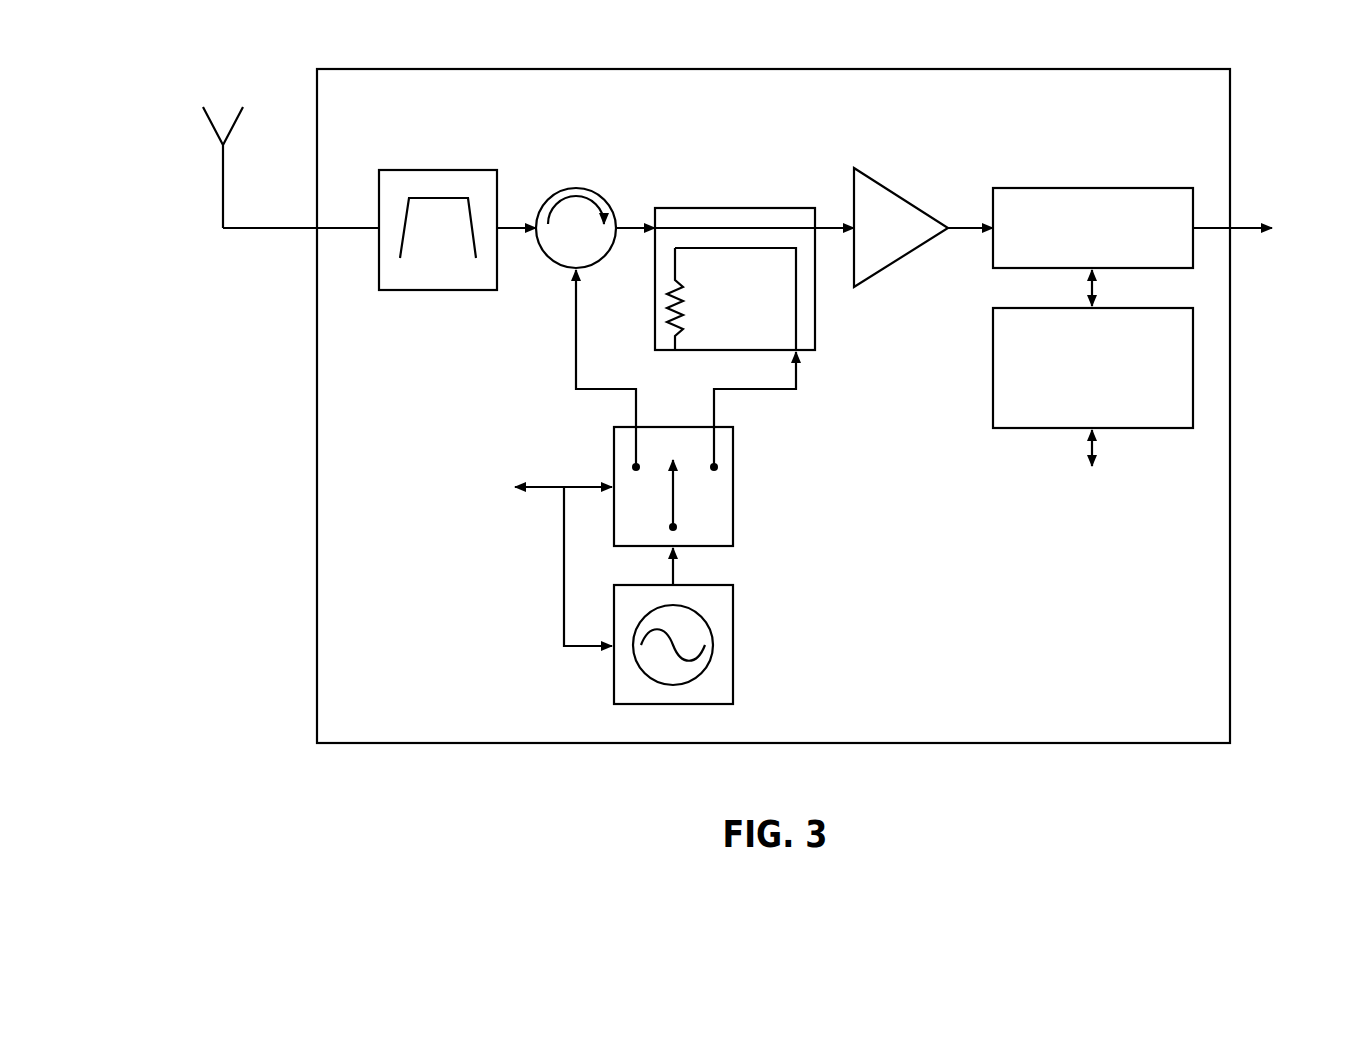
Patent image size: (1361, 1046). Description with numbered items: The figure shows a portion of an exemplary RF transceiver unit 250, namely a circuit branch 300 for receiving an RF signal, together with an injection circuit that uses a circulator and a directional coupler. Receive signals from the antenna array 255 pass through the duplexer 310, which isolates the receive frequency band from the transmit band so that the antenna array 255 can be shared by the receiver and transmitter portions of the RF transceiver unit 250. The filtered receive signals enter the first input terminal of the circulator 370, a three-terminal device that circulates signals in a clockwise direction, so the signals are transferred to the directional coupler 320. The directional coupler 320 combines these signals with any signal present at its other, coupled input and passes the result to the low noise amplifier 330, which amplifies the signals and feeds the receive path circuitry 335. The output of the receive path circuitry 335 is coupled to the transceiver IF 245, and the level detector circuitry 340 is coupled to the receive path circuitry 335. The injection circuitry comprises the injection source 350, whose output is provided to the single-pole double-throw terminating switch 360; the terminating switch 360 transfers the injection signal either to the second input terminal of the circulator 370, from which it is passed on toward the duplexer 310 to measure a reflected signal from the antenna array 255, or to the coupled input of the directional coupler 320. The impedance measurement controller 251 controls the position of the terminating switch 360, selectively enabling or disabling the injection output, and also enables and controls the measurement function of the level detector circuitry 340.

The RF transceiver unit 250 is at (782, 68).
The antenna array 255 is at (212, 128).
The circuit branch 300 is at (950, 592).
The duplexer 310 is at (437, 170).
The directional coupler 320 is at (735, 208).
The low noise amplifier 330 is at (898, 193).
The receive path circuitry 335 is at (1093, 188).
The level detector circuitry 340 is at (993, 368).
The injection source 350 is at (736, 646).
The single-pole double-throw terminating switch 360 is at (736, 487).
The circulator 370 is at (576, 188).
The impedance measurement controller 251 is at (760, 547).
The transceiver IF 245 is at (1273, 227).